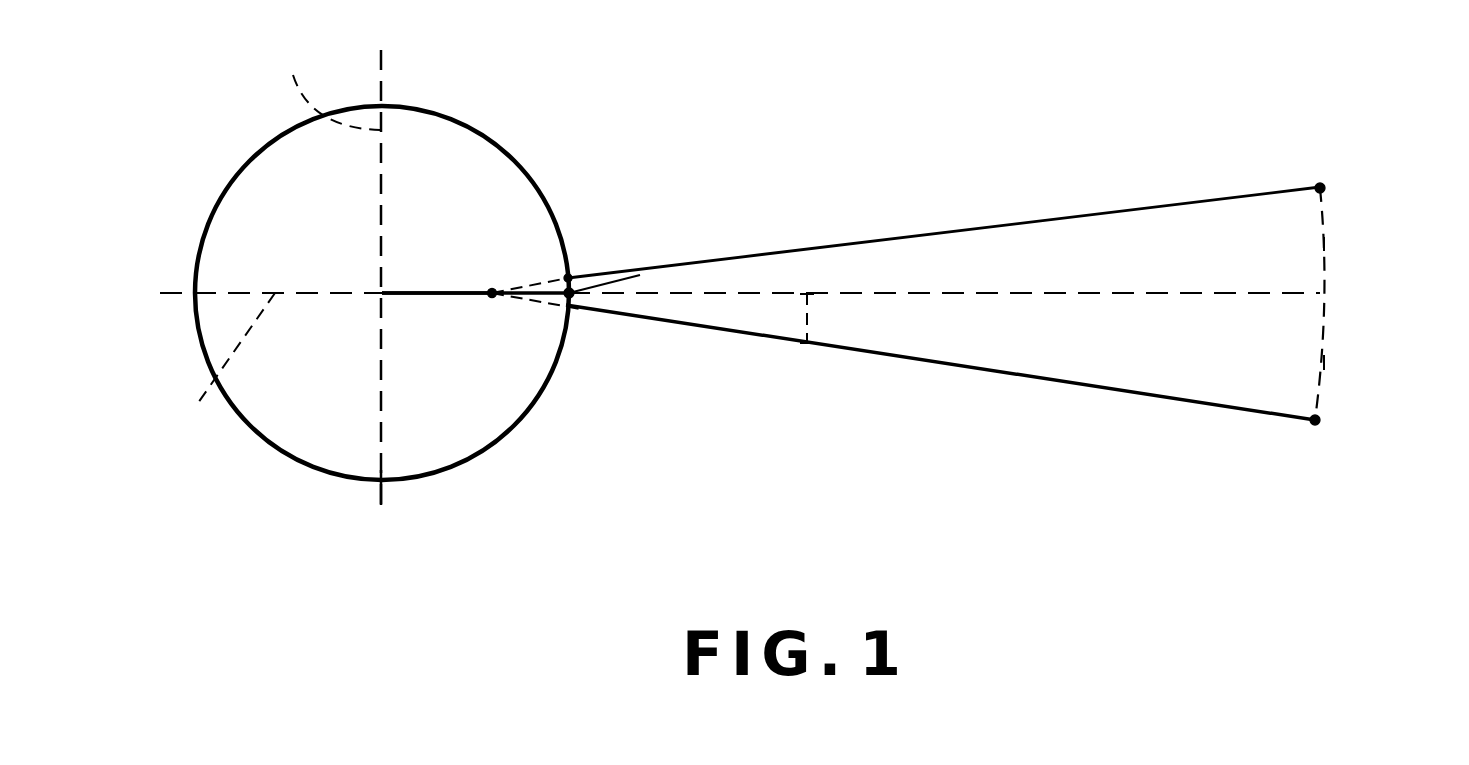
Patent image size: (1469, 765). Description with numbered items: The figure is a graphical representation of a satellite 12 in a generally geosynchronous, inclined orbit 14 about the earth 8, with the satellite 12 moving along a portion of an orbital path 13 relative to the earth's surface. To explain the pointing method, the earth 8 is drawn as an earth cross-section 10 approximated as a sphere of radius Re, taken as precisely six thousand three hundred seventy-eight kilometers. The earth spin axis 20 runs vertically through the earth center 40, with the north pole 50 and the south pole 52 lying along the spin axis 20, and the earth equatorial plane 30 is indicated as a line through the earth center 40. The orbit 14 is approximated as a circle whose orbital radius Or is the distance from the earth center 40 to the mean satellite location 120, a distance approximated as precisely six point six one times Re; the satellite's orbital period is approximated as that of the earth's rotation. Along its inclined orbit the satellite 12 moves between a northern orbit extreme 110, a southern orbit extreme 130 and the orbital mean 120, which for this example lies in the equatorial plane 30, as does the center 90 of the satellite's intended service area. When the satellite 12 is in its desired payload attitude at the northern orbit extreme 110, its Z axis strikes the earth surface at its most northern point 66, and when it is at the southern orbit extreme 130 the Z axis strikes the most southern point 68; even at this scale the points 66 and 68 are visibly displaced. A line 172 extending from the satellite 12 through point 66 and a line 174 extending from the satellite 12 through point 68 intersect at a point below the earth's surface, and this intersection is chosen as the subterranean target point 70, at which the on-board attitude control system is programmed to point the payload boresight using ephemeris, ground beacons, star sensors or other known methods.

The earth 8 is at (411, 264).
The earth cross-section 10 is at (495, 443).
The satellite 12 is at (1320, 188).
The orbital path 13 is at (1324, 244).
The inclined geosynchronous orbit 14 is at (1324, 363).
The earth spin axis 20 is at (326, 88).
The earth equatorial plane 30 is at (211, 359).
The earth center 40 is at (382, 293).
The north pole 50 is at (382, 106).
The south pole 52 is at (378, 482).
The most northern point 66 is at (568, 278).
The most southern point 68 is at (570, 300).
The subterranean target point 70 is at (490, 297).
The center of intended service area 90 is at (569, 291).
The northern orbit extreme 110 is at (1320, 185).
The orbital mean 120 is at (1323, 285).
The southern orbit extreme 130 is at (1315, 420).
The line through point 66 172 is at (913, 237).
The line through point 68 174 is at (962, 368).
The earth radius Re is at (452, 291).
The orbital radius Or is at (820, 343).